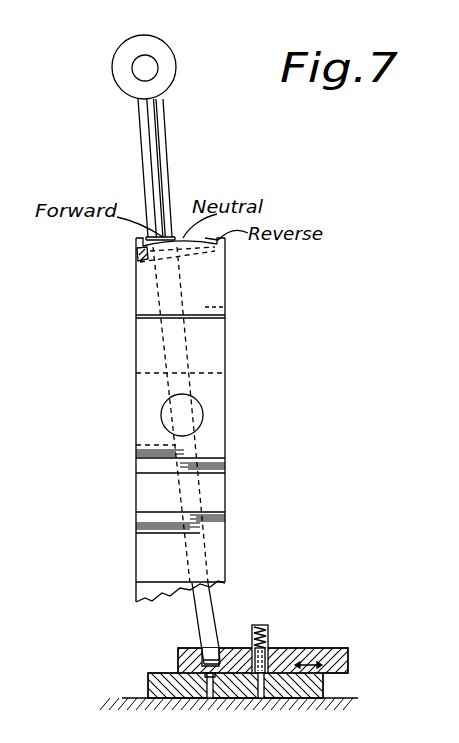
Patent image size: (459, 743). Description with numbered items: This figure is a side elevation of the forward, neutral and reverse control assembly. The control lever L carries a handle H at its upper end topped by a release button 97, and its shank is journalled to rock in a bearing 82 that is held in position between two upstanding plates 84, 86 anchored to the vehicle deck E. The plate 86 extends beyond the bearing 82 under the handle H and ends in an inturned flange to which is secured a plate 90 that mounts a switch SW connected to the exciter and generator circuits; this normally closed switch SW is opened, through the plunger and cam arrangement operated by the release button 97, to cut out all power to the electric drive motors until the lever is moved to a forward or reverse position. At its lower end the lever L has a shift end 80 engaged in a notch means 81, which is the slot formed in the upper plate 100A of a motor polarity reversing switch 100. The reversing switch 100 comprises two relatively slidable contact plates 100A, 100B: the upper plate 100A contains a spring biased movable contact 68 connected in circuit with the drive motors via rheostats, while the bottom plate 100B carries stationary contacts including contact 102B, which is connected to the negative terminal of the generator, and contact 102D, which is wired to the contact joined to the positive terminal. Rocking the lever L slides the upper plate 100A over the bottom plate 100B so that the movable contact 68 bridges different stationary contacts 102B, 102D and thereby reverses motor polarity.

The handle H is at (133, 36).
The release button 97 is at (132, 68).
The forward, neutral and reverse control lever L is at (160, 132).
The plate 90 is at (148, 240).
The switch SW is at (142, 259).
The upstanding plate 84 is at (210, 371).
The bearing 82 is at (161, 415).
The upstanding plate 86 is at (155, 515).
The shift end 80 is at (207, 654).
The notch means 81 is at (203, 662).
The spring biased movable contact 68 is at (268, 650).
The motor polarity reversing switch 100 is at (326, 642).
The upper contact plate 100A is at (180, 650).
The bottom contact plate 100B is at (148, 684).
The vehicle deck E is at (338, 697).
The stationary contact 102D is at (210, 700).
The stationary contact 102B is at (270, 692).